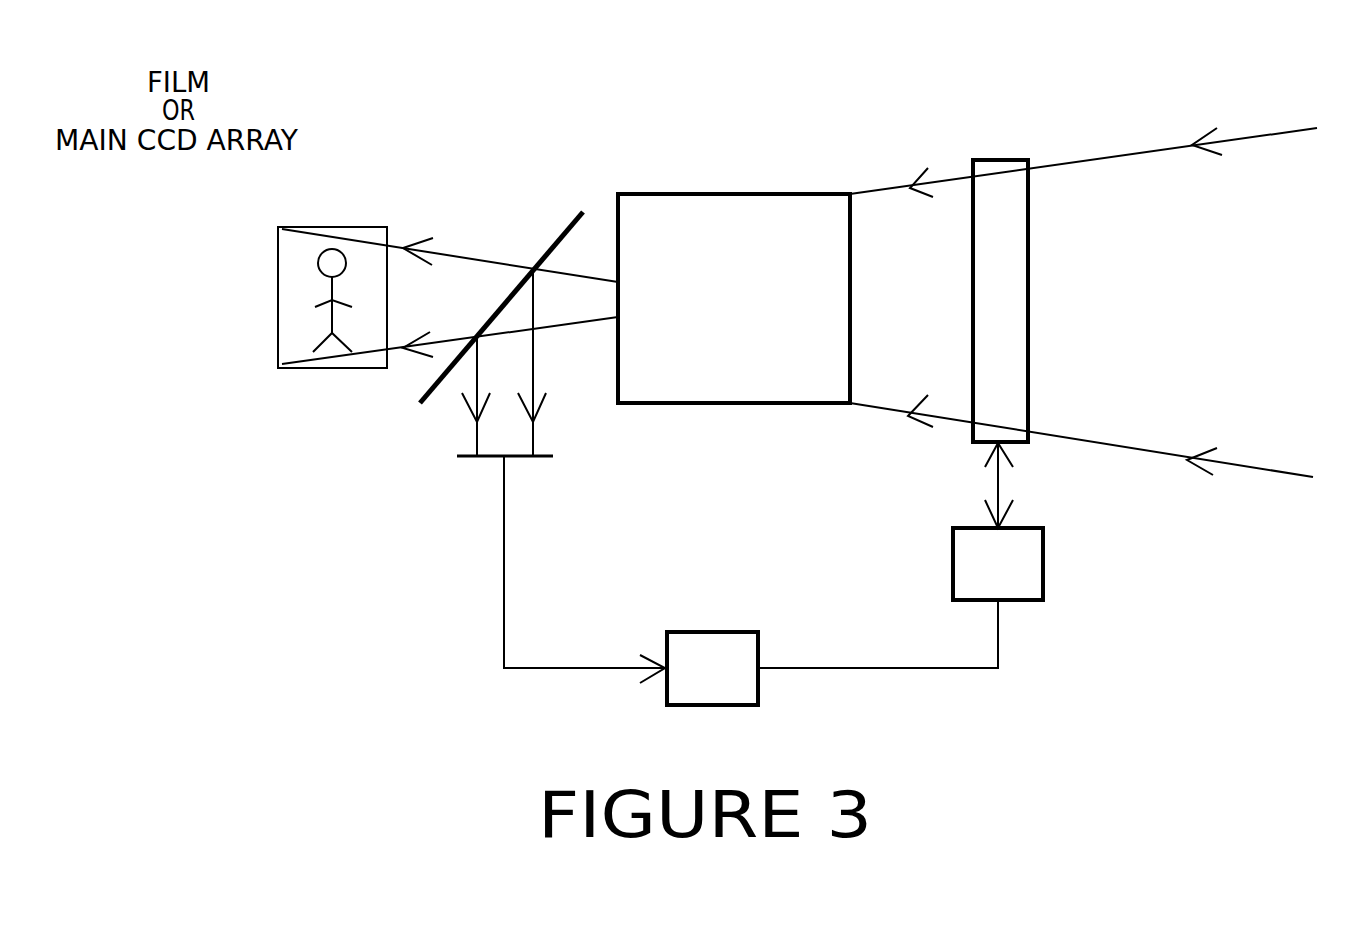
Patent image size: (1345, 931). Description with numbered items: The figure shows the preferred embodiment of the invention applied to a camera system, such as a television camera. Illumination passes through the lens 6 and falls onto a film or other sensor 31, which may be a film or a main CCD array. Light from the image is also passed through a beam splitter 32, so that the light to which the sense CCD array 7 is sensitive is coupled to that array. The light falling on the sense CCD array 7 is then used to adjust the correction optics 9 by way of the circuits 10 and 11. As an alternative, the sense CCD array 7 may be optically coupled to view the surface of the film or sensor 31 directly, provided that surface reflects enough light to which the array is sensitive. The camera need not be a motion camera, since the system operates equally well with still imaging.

The film or other sensor 31 is at (273, 267).
The beam splitter 32 is at (553, 228).
The lens 6 is at (728, 187).
The correction optics 9 is at (1040, 258).
The sense CCD array 7 is at (465, 468).
The circuit 10 is at (998, 564).
The circuit 11 is at (712, 668).